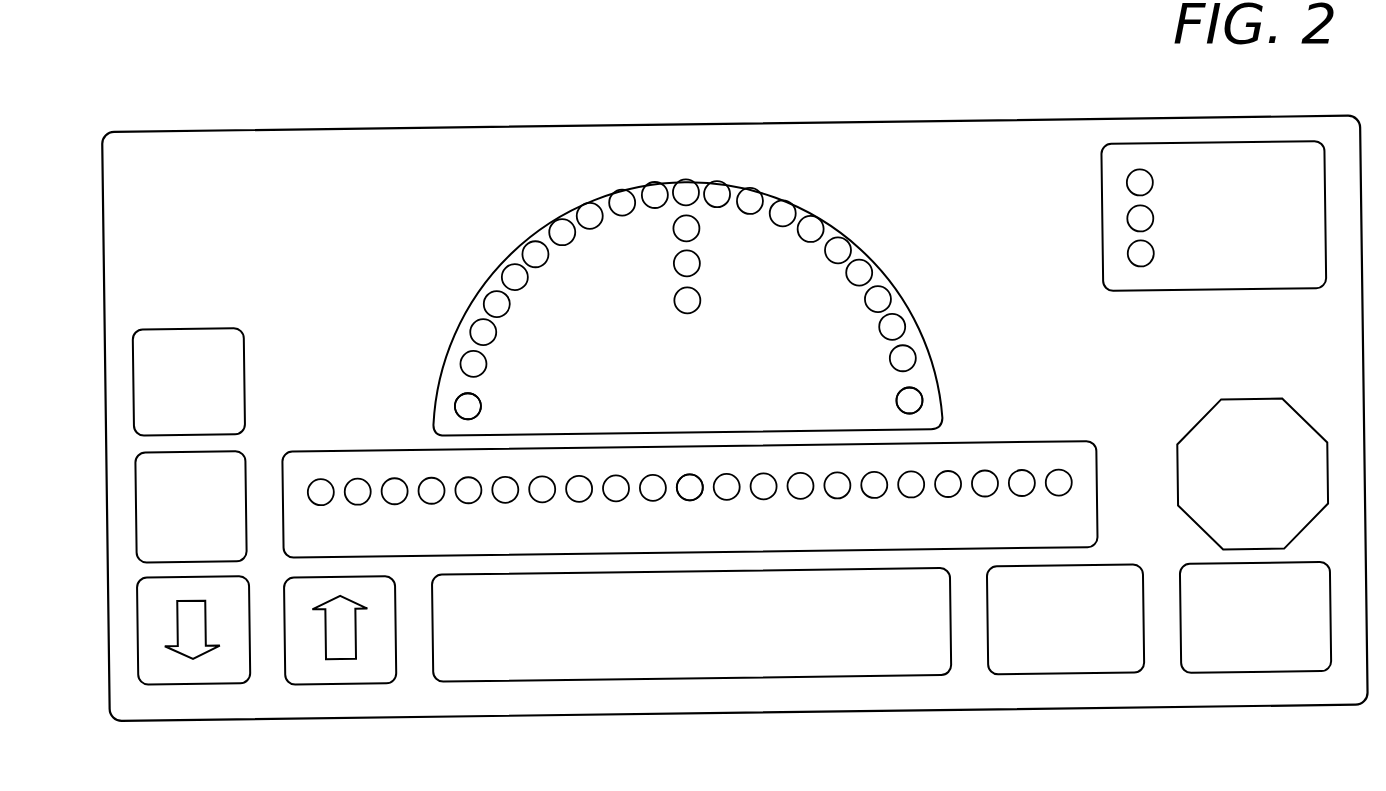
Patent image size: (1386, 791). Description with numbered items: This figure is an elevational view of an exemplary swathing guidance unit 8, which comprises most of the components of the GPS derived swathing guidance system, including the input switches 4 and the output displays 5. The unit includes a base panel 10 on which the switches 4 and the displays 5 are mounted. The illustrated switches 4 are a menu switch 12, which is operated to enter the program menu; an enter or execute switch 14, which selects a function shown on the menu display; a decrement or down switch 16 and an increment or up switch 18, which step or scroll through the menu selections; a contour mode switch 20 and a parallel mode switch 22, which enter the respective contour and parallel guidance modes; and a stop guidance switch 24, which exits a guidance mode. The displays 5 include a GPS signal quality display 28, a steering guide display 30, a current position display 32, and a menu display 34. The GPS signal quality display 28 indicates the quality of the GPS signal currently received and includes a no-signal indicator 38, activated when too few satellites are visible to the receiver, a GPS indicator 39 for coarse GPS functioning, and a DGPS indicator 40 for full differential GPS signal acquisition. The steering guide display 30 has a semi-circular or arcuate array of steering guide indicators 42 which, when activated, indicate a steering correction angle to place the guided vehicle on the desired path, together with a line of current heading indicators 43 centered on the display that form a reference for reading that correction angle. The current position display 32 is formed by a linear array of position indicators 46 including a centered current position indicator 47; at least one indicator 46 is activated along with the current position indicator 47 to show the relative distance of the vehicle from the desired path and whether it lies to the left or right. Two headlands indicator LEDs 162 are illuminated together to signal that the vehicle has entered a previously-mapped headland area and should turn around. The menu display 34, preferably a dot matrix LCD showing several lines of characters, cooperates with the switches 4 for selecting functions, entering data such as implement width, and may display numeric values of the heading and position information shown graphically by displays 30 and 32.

The input switches 4 is at (198, 303).
The output display devices 5 is at (388, 243).
The swathing guidance unit 8 is at (471, 112).
The base panel 10 is at (862, 141).
The menu switch 12 is at (227, 340).
The enter switch 14 is at (236, 462).
The down switch 16 is at (208, 677).
The up switch 18 is at (367, 679).
The contour mode switch 20 is at (1089, 675).
The parallel mode switch 22 is at (1275, 677).
The stop guidance switch 24 is at (1243, 424).
The GPS signal quality display 28 is at (1181, 183).
The steering guide display 30 is at (688, 257).
The current position display 32 is at (690, 470).
The menu display 34 is at (753, 676).
The no signal indicator 38 is at (1131, 191).
The GPS indicator 39 is at (1132, 236).
The DGPS indicator 40 is at (1131, 271).
The steering guide indicators 42 is at (590, 216).
The current heading indicators 43 is at (687, 198).
The position indicators 46 is at (391, 487).
The current position indicator 47 is at (688, 490).
The headlands indicator LEDs 162 is at (466, 409).